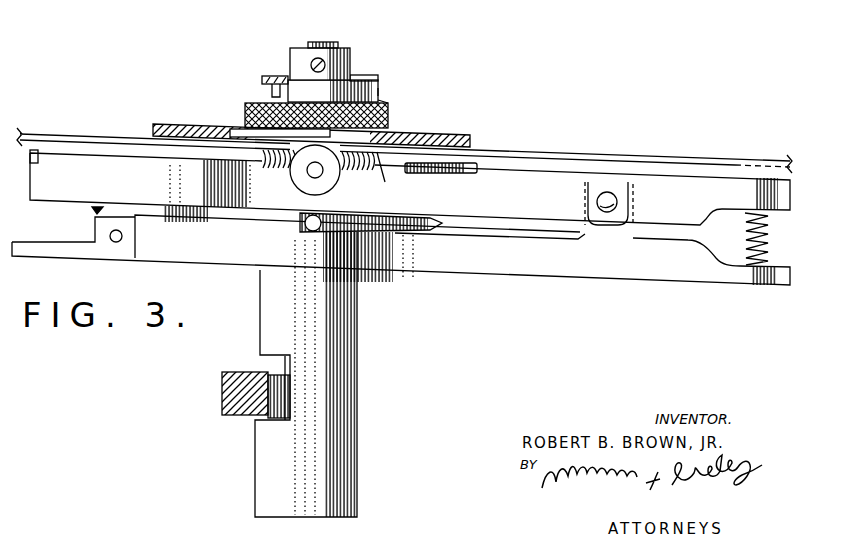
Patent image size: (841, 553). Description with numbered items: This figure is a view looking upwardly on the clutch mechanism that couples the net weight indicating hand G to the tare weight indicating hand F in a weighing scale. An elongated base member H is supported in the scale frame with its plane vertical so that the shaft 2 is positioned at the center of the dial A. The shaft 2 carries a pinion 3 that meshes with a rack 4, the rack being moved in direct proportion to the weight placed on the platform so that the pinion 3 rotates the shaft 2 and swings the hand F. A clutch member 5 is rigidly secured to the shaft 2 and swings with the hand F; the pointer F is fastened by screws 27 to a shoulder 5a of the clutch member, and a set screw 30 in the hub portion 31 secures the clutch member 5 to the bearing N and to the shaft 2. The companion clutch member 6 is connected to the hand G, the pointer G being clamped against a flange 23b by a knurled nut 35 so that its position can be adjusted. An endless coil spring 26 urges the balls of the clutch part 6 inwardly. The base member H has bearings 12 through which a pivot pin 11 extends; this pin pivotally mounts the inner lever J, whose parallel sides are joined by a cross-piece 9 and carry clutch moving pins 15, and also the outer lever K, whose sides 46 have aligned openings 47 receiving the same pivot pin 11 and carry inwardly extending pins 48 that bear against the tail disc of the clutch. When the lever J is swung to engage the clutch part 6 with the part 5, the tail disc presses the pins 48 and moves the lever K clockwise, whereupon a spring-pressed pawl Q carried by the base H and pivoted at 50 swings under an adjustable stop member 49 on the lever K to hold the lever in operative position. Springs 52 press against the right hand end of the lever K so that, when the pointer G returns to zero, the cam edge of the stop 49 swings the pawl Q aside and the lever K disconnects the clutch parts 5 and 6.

The bearing N is at (296, 46).
The set screw 30 is at (316, 62).
The shaft 2 is at (324, 46).
The screws 27 is at (362, 76).
The shoulder 5a is at (290, 69).
The hub portion 31 is at (286, 74).
The tare weight indicating hand F is at (386, 77).
The clutch member 5 is at (380, 94).
The clutch member 6 is at (380, 102).
The knurled nut 35 is at (246, 116).
The flange 23b is at (398, 138).
The net weight indicating hand G is at (474, 138).
The dial A is at (738, 163).
The outer lever K is at (532, 194).
The adjustable stop member 49 is at (30, 163).
The spring-pressed pawl Q is at (96, 207).
The pins 48 is at (313, 173).
The endless coil spring 26 is at (379, 165).
The cross-piece 9 is at (470, 174).
The pivot pin 11 is at (607, 200).
The sides 46 is at (650, 195).
The aligned openings 47 is at (615, 206).
The springs 52 is at (745, 245).
The base member H is at (647, 262).
The bearings 12 is at (585, 240).
The inner lever J is at (427, 221).
The clutch moving pins 15 is at (310, 229).
The pivot 50 is at (114, 240).
The pinion 3 is at (292, 392).
The rack 4 is at (232, 413).